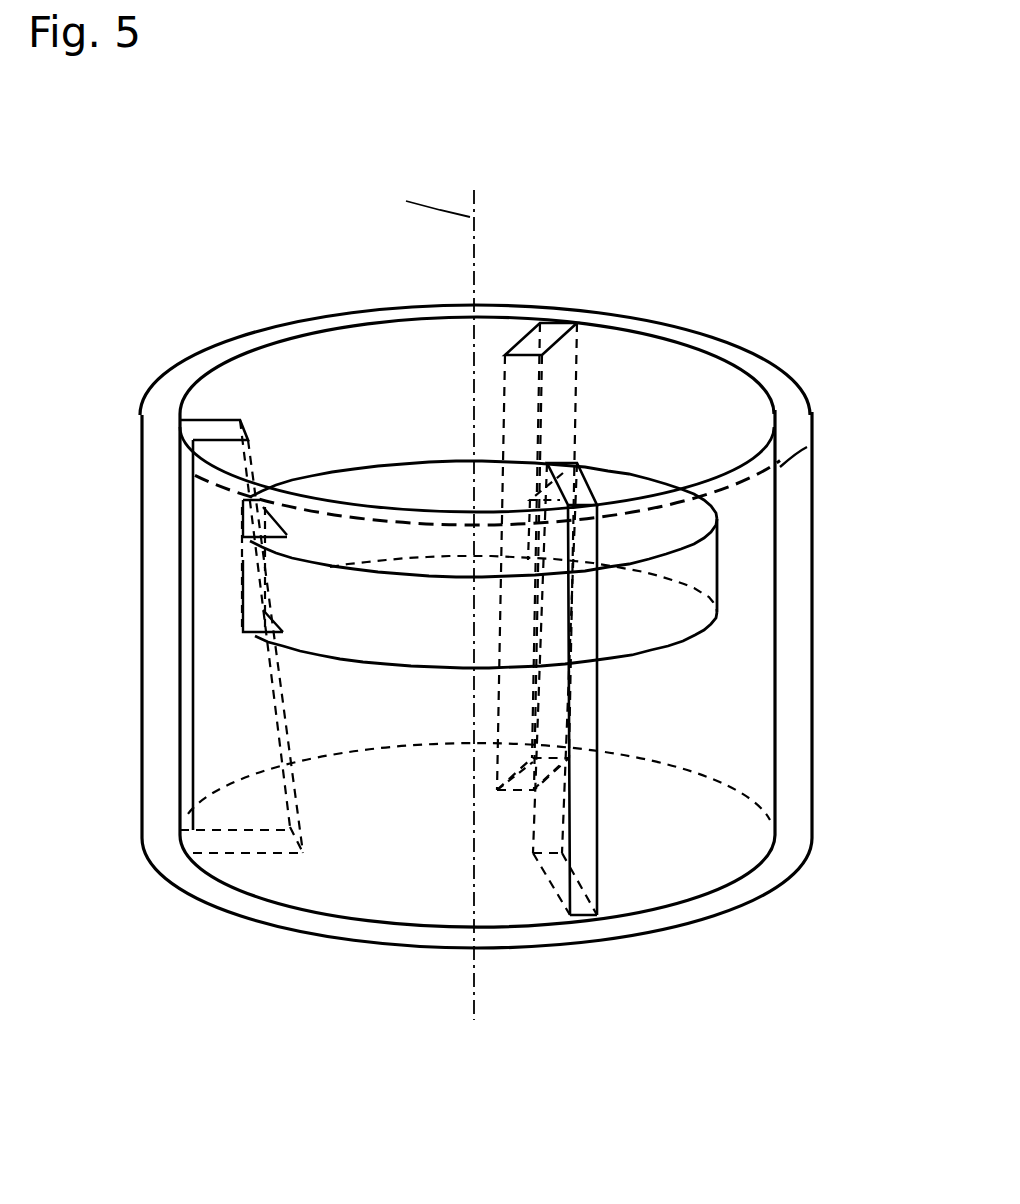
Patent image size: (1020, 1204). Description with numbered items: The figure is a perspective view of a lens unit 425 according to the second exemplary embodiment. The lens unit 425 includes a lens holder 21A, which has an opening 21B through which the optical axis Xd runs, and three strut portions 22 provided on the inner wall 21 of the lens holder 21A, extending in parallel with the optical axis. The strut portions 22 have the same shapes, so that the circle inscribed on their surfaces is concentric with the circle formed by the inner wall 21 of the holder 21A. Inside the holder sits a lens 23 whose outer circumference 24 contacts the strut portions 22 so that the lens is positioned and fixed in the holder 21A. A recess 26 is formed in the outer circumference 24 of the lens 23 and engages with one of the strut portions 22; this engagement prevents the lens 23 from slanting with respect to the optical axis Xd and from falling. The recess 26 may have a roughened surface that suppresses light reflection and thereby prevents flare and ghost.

The lens unit 425 is at (673, 263).
The inner wall 21 is at (703, 398).
The lens holder 21A is at (793, 487).
The opening 21B is at (357, 365).
The strut portions 22 is at (218, 428).
The lens 23 is at (680, 540).
The outer circumference 24 is at (245, 548).
The recess 26 is at (253, 500).